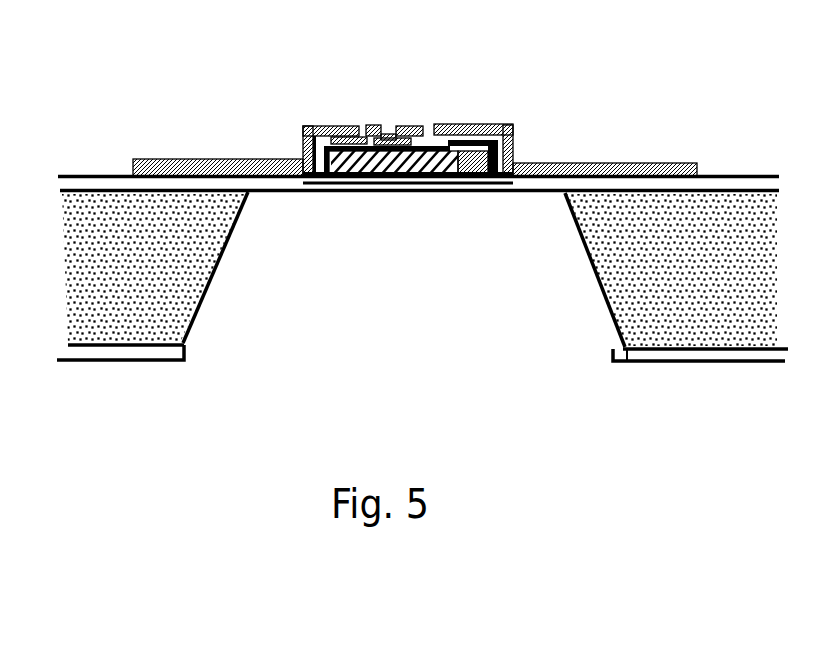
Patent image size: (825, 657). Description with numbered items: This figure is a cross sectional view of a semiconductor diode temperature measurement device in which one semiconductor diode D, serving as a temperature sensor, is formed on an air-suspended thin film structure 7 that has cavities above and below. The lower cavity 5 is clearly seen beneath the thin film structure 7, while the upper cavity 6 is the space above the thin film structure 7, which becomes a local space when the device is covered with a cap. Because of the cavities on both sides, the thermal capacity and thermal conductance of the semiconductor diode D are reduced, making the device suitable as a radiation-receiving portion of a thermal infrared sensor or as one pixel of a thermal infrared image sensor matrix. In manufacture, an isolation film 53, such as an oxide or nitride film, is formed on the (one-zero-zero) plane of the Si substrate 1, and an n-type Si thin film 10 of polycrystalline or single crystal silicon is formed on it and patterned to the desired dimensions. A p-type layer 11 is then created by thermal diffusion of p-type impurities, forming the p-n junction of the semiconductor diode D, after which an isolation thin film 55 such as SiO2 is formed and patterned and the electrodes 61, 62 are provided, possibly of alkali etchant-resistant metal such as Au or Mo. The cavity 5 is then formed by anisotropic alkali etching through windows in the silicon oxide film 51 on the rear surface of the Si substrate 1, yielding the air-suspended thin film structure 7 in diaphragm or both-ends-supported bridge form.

The Si substrate 1 is at (172, 278).
The lower cavity 5 is at (359, 305).
The thin film structure 7 is at (303, 189).
The n-type Si thin film 10 is at (343, 175).
The p-type layer 11 is at (457, 125).
The silicon oxide film 51 is at (627, 355).
The isolation film 53 is at (75, 175).
The isolation thin film 55 is at (323, 126).
The electrode 61 is at (593, 165).
The electrode 62 is at (223, 160).
The upper cavity 6 is at (432, 108).
The semiconductor diode D is at (368, 108).